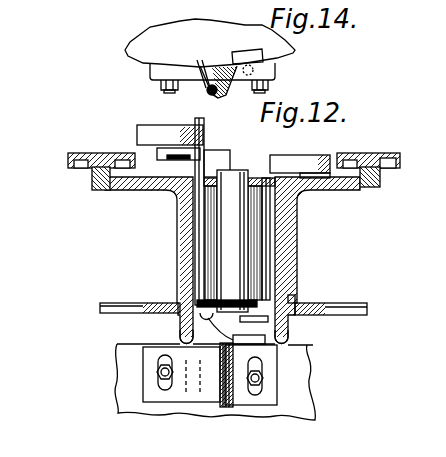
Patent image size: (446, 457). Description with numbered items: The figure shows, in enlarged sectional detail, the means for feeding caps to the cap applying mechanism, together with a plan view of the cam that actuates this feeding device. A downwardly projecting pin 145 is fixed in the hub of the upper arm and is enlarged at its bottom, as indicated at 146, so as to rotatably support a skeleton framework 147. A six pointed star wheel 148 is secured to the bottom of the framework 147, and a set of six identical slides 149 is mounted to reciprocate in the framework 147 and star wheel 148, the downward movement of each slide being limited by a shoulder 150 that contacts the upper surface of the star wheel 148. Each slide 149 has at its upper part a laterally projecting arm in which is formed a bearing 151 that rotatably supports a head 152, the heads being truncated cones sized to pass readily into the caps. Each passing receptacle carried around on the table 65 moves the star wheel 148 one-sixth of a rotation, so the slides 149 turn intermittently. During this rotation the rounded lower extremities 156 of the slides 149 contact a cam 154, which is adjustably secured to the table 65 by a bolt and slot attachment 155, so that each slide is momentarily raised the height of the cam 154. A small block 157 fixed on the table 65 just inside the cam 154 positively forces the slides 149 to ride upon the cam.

In FIG. 14, the table 65 is at (147, 38).
In FIG. 12, the table 65 is at (306, 372).
In FIG. 12, the pin 145 is at (242, 168).
In FIG. 12, the enlarged bottom of pin 146 is at (190, 296).
In FIG. 12, the skeleton framework 147 is at (207, 228).
In FIG. 12, the star wheel 148 is at (341, 300).
In FIG. 12, the slides 149 is at (213, 158).
In FIG. 12, the shoulder 150 is at (295, 298).
In FIG. 12, the bearing 151 is at (96, 183).
In FIG. 12, the head 152 is at (122, 134).
In FIG. 14, the cam 154 is at (200, 80).
In FIG. 12, the cam 154 is at (225, 352).
In FIG. 14, the bolt and slot attachment 155 is at (160, 85).
In FIG. 12, the bolt and slot attachment 155 is at (157, 372).
In FIG. 14, the rounded lower extremity 156 is at (212, 96).
In FIG. 12, the rounded lower extremity 156 is at (180, 342).
In FIG. 14, the small block 157 is at (245, 56).
In FIG. 12, the small block 157 is at (252, 335).